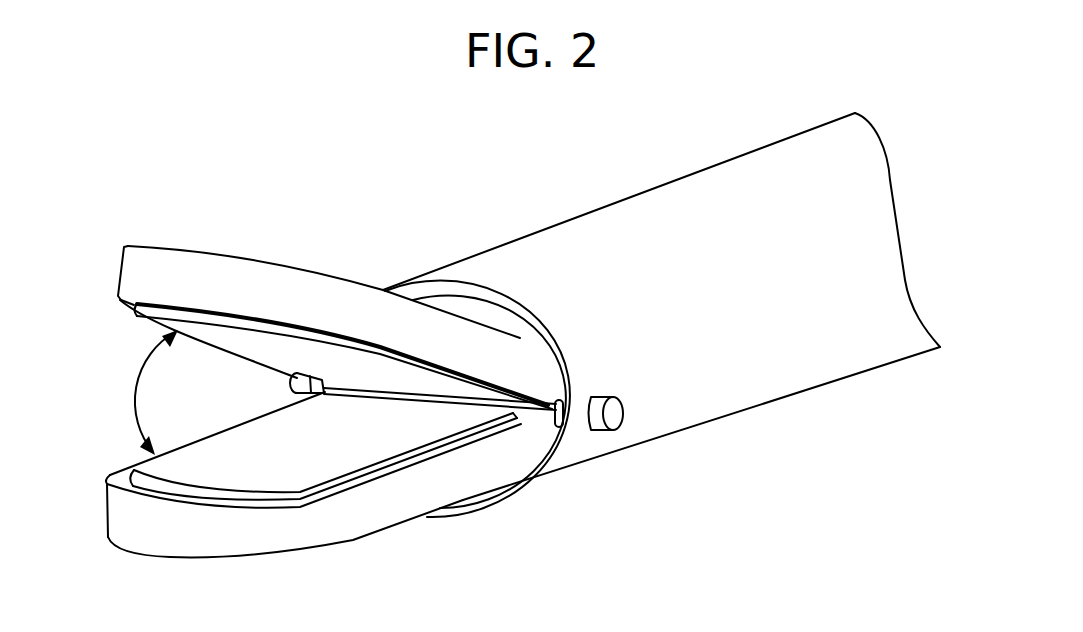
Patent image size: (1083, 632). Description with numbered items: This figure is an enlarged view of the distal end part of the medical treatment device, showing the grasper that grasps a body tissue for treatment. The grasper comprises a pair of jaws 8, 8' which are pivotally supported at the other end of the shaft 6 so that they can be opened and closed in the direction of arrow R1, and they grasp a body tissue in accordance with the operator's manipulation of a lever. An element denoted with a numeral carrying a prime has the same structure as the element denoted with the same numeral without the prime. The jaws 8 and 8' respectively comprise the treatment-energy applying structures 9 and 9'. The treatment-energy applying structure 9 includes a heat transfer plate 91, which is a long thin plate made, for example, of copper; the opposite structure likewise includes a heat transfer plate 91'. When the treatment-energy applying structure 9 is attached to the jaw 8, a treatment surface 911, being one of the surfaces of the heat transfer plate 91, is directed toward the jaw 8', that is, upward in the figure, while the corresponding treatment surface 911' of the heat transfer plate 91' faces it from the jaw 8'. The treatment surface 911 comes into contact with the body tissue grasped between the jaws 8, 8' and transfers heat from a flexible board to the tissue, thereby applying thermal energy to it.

The shaft 6 is at (565, 232).
The jaw 8 is at (313, 496).
The jaw 8' is at (319, 290).
The treatment-energy applying structure 9 is at (323, 506).
The heat transfer plate 91 is at (323, 506).
The treatment surface 911 is at (323, 506).
The treatment-energy applying structure 9' is at (344, 306).
The heat transfer plate 91' is at (344, 306).
The treatment surface 911' is at (342, 304).
The arrow R1 is at (133, 402).